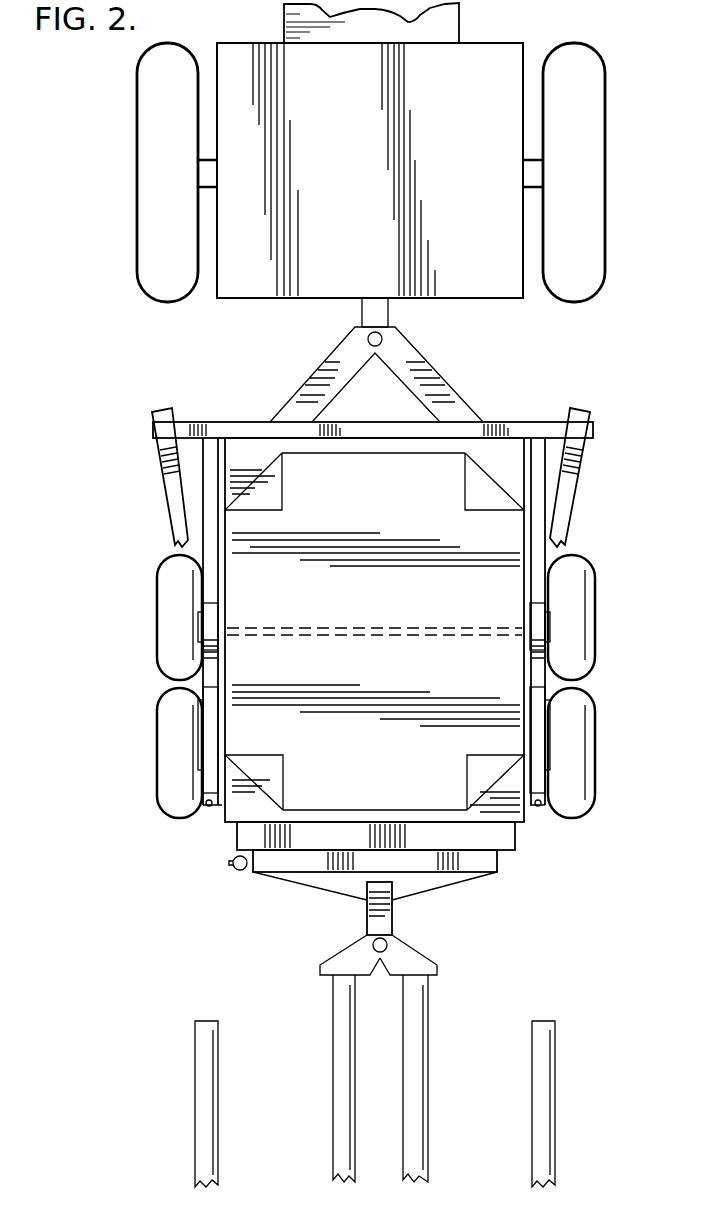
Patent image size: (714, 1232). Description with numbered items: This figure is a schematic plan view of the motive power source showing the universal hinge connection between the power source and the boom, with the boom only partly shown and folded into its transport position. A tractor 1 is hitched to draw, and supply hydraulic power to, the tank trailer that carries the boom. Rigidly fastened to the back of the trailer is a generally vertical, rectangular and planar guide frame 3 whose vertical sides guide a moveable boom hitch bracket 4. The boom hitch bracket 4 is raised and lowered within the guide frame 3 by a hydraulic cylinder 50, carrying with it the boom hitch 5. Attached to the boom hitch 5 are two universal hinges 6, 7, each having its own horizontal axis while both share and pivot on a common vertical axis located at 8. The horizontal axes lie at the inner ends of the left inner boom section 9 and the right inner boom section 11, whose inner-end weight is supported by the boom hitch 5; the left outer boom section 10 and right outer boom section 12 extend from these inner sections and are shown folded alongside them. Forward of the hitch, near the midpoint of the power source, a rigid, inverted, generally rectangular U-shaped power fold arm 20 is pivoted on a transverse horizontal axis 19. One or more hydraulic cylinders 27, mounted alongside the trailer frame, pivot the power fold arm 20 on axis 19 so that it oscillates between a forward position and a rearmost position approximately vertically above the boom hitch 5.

The tractor 1 is at (253, 301).
The power fold arm 20 is at (505, 419).
The transverse horizontal axis 19 is at (333, 628).
The hydraulic cylinder 27 is at (200, 697).
The guide frame 3 is at (518, 836).
The boom hitch bracket 4 is at (503, 862).
The hydraulic cylinder 50 is at (232, 866).
The boom hitch 5 is at (393, 906).
The common vertical axis 8 is at (389, 940).
The universal hinge 6 is at (342, 959).
The universal hinge 7 is at (418, 962).
The left inner boom section 9 is at (332, 1002).
The left outer boom section 10 is at (218, 1043).
The right inner boom section 11 is at (428, 1043).
The right outer boom section 12 is at (555, 1043).